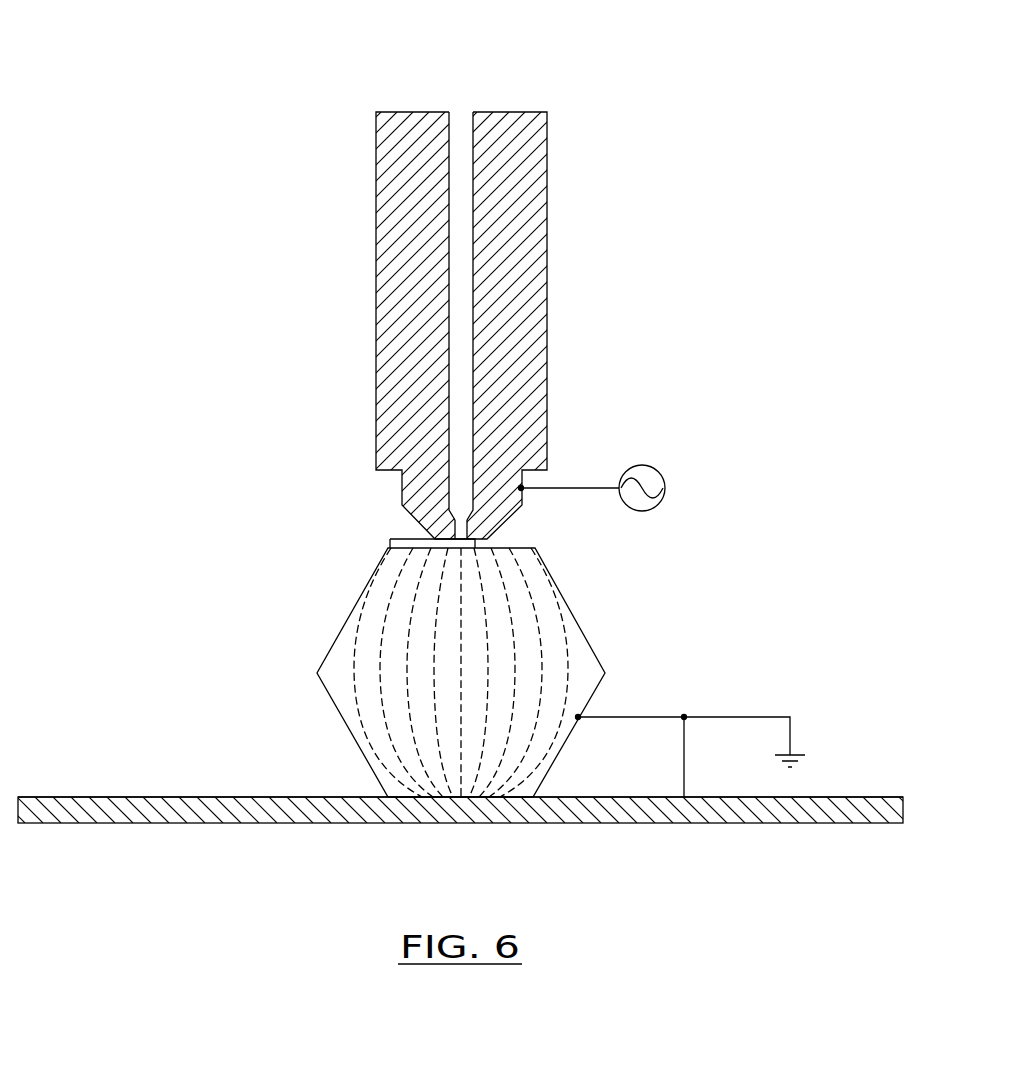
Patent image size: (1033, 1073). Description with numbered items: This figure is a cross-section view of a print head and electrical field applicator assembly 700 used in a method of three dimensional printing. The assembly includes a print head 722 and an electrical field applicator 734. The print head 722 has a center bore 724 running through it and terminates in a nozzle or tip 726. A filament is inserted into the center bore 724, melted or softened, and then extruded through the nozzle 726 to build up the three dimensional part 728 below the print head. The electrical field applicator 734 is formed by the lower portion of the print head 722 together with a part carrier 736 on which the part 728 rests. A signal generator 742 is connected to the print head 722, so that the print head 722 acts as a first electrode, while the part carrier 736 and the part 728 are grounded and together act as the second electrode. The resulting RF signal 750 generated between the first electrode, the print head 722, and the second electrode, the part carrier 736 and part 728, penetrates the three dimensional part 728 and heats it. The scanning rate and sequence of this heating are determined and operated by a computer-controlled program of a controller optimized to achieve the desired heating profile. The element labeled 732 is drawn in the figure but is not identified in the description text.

The print head and electrical field applicator assembly 700 is at (692, 52).
The print head 722 is at (547, 165).
The center bore 724 is at (472, 125).
The nozzle 726 is at (458, 528).
The three dimensional part 728 is at (586, 632).
The substrate 732 is at (865, 796).
The electrical field applicator 734 is at (389, 541).
The part carrier 736 is at (148, 796).
The signal generator 742 is at (642, 465).
The RF signal 750 is at (340, 632).